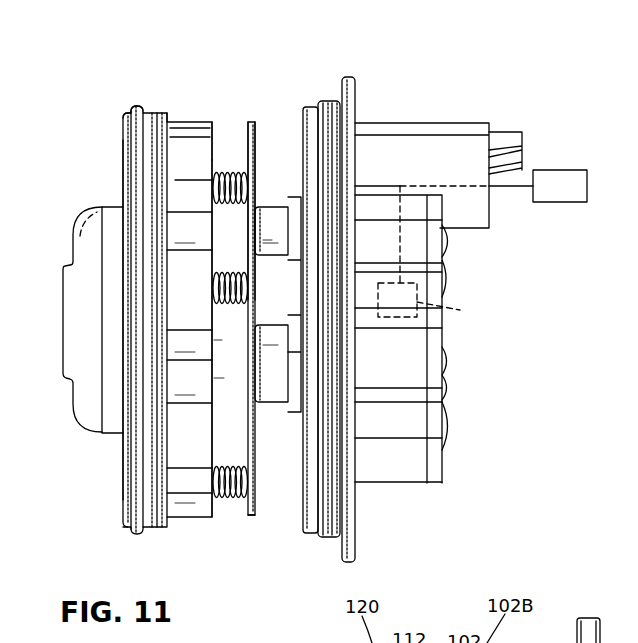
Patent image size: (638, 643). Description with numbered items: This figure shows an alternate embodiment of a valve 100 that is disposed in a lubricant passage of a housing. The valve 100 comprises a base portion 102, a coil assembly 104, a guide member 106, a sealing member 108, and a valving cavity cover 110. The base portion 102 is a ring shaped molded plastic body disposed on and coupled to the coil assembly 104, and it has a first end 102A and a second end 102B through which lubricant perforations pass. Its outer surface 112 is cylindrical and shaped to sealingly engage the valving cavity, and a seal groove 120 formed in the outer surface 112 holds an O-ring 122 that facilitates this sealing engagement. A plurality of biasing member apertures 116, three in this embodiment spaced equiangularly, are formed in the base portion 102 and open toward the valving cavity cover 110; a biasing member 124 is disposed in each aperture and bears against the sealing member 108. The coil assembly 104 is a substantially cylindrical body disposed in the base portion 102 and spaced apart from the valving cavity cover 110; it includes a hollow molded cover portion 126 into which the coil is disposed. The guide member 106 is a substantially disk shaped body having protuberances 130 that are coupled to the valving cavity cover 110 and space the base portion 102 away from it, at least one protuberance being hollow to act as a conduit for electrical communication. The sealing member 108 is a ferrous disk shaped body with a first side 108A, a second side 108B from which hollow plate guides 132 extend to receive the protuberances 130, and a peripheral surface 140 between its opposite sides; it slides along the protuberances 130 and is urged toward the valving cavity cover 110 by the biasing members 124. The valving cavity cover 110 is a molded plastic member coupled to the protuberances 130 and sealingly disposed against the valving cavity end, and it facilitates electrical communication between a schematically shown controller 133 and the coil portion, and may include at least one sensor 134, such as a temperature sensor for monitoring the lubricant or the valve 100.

The valve 100 is at (86, 118).
The base portion 102 is at (172, 306).
The first end 102A is at (123, 500).
The second end 102B is at (214, 158).
The coil assembly 104 is at (78, 215).
The guide member 106 is at (230, 330).
The sealing member 108 is at (271, 306).
The first side 108A is at (246, 127).
The second side 108B is at (257, 128).
The valving cavity cover 110 is at (450, 411).
The outer surface 112 is at (183, 121).
The biasing member apertures 116 is at (212, 122).
The seal groove 120 is at (128, 112).
The O-ring 122 is at (143, 109).
The biasing member 124 is at (213, 187).
The cover portion 126 is at (80, 422).
The protuberances 130 is at (222, 378).
The plate guides 132 is at (272, 256).
The controller 133 is at (565, 170).
The sensor 134 is at (441, 254).
The peripheral surface 140 is at (250, 517).